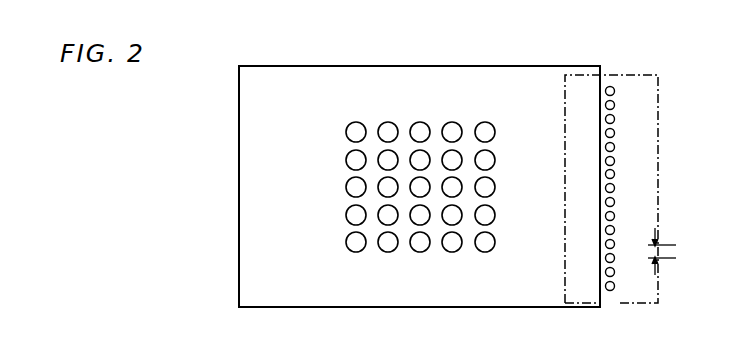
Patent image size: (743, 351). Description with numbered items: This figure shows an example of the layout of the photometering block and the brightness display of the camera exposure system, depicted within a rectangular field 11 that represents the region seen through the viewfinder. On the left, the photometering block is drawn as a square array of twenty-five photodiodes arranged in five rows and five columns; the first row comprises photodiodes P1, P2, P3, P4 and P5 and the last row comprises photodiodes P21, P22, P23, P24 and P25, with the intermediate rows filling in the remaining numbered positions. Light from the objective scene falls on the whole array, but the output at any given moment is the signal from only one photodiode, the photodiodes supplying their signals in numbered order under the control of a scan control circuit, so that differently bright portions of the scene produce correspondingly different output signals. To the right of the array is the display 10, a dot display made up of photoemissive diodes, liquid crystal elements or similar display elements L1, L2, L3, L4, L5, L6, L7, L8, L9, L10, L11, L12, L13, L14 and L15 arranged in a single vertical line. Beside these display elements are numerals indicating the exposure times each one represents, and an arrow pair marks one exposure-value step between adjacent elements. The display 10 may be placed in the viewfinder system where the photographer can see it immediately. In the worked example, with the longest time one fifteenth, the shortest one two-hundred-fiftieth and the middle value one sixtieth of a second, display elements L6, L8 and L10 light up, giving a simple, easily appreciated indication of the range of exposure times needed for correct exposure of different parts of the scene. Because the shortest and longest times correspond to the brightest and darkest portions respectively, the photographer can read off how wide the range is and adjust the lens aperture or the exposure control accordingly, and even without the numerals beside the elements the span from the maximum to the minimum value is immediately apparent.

The display 10 is at (638, 165).
The viewfinder field frame 11 is at (419, 166).
The photodiode P1 is at (356, 115).
The photodiode P2 is at (390, 115).
The photodiode P3 is at (424, 115).
The photodiode P4 is at (458, 115).
The photodiode P5 is at (493, 115).
The photodiode P21 is at (358, 259).
The photodiode P22 is at (396, 258).
The photodiode P23 is at (429, 260).
The photodiode P24 is at (465, 259).
The photodiode P25 is at (501, 259).
The display element L1 is at (620, 91).
The display element L2 is at (620, 105).
The display element L3 is at (620, 119).
The display element L4 is at (620, 133).
The display element L5 is at (620, 147).
The display element L6 is at (620, 161).
The display element L7 is at (620, 174).
The display element L8 is at (620, 188).
The display element L9 is at (620, 202).
The display element L10 is at (624, 216).
The display element L11 is at (624, 230).
The display element L12 is at (624, 244).
The display element L13 is at (624, 258).
The display element L14 is at (624, 272).
The display element L15 is at (624, 286).